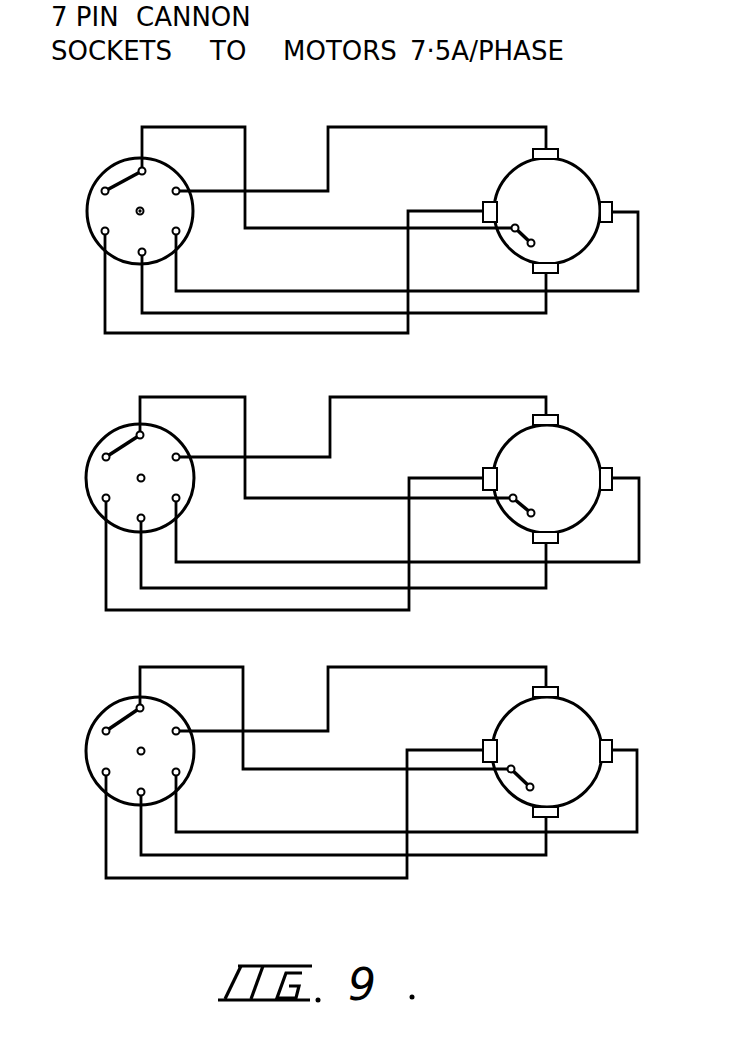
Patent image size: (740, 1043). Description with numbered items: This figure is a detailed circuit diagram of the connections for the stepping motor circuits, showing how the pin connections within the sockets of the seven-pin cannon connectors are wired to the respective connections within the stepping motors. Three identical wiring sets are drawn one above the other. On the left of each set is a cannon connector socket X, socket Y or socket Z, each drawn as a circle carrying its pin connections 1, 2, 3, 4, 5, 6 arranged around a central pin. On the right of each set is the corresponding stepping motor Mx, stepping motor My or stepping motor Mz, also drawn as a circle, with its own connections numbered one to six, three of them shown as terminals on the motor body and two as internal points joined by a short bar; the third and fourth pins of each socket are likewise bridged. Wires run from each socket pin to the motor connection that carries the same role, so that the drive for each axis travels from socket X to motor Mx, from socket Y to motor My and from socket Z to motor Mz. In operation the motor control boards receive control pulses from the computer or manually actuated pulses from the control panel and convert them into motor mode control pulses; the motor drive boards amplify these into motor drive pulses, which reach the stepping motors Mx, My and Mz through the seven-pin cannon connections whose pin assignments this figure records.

The pin connection 1 is at (322, 497).
The pin connection 2 is at (315, 495).
The pin connection 3 is at (330, 449).
The pin connection 4 is at (373, 465).
The pin connection 5 is at (358, 499).
The pin connection 6 is at (352, 501).
The cannon connector socket X is at (127, 211).
The cannon connector socket Y is at (127, 478).
The cannon connector socket Z is at (124, 751).
The stepping motor Mx is at (560, 207).
The stepping motor My is at (557, 472).
The stepping motor Mz is at (558, 744).